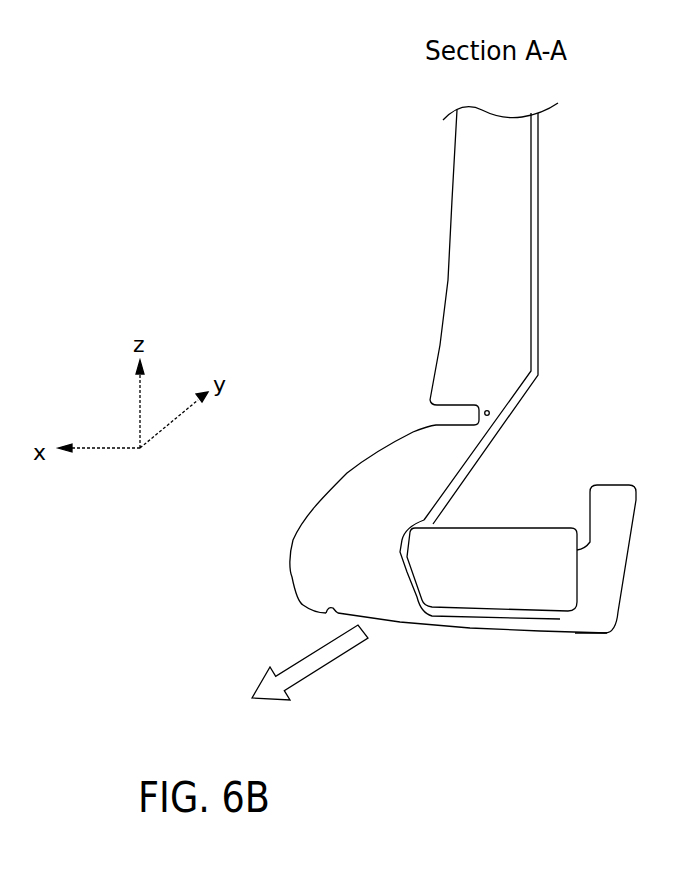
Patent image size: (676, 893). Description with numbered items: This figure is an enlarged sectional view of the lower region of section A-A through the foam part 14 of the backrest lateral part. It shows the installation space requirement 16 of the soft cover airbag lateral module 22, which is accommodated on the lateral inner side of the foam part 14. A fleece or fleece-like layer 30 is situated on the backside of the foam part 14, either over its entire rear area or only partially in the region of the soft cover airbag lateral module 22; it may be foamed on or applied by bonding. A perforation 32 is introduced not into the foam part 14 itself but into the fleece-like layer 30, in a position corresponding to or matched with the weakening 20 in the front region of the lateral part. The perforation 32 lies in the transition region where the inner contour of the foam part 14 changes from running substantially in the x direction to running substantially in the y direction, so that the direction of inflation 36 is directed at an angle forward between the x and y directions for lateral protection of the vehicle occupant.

The foam part 14 is at (467, 258).
The fleece-like layer 30 is at (537, 197).
The weakening 20 is at (323, 612).
The soft cover airbag lateral module 22 is at (530, 538).
The perforation 32 is at (430, 618).
The installation space requirement 16 is at (562, 619).
The direction of inflation 36 is at (249, 694).